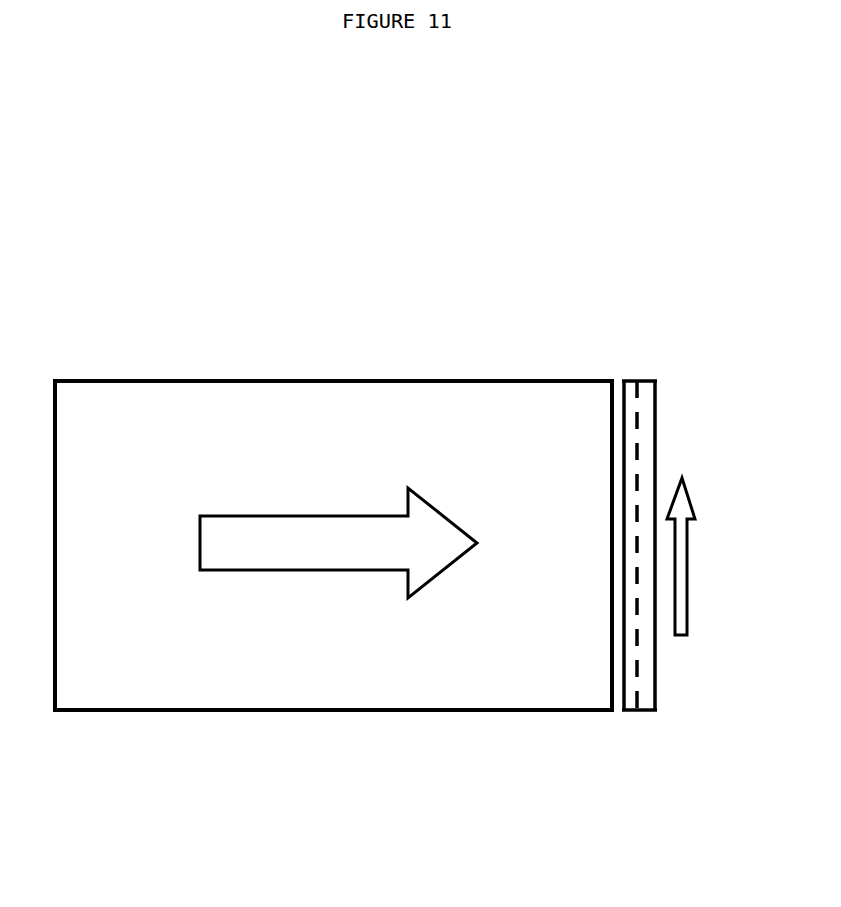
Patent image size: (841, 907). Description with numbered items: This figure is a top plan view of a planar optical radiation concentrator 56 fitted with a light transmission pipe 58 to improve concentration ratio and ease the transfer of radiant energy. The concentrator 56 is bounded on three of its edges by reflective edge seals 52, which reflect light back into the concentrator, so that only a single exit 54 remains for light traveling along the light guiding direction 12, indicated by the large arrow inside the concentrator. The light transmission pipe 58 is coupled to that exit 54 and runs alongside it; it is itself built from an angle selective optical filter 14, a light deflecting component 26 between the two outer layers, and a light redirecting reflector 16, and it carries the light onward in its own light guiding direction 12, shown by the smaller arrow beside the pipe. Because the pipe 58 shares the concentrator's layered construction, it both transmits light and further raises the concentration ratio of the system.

The optical radiation concentrator 56 is at (376, 549).
The reflective edge seal 52 is at (336, 382).
The exit 54 is at (612, 520).
The light transmission pipe 58 is at (626, 546).
The angle selective optical filter 14 is at (614, 710).
The light deflecting component 26 is at (640, 690).
The light redirecting reflector 16 is at (656, 690).
The light guiding direction 12 is at (335, 555).